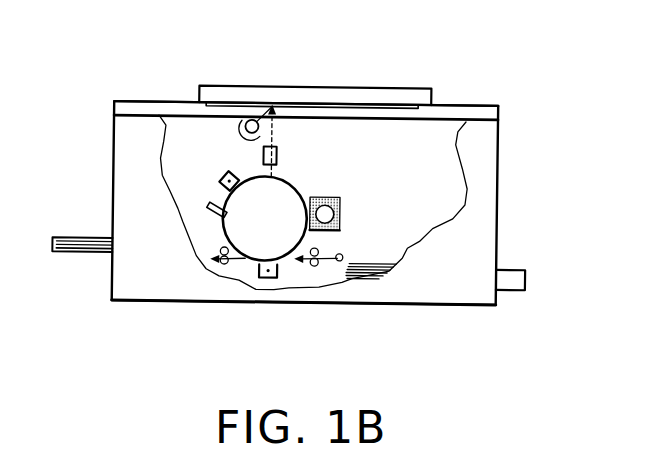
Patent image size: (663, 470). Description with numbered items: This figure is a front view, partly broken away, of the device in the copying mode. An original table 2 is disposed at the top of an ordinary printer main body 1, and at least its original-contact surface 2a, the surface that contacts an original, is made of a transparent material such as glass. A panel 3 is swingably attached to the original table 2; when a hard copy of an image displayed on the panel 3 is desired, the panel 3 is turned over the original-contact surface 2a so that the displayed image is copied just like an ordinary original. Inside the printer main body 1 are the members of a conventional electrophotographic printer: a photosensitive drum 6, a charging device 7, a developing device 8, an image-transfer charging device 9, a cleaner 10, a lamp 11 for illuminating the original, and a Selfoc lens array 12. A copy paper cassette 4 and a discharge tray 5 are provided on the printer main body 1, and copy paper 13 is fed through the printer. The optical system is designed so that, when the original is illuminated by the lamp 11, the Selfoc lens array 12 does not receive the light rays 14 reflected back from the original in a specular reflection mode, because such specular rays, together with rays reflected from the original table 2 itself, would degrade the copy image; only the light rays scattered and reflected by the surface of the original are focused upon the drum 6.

The printer main body 1 is at (497, 138).
The original table 2 is at (463, 107).
The original-contact surface 2a is at (400, 108).
The panel 3 is at (367, 98).
The copy paper cassette 4 is at (511, 267).
The discharge tray 5 is at (72, 256).
The photosensitive drum 6 is at (297, 188).
The charging device 7 is at (221, 182).
The developing device 8 is at (341, 212).
The image-transfer charging device 9 is at (276, 279).
The cleaner 10 is at (212, 216).
The lamp for illuminating an original 11 is at (240, 130).
The Selfoc lens array 12 is at (277, 155).
The copy paper 13 is at (388, 263).
The specularly reflected light rays 14 is at (292, 124).